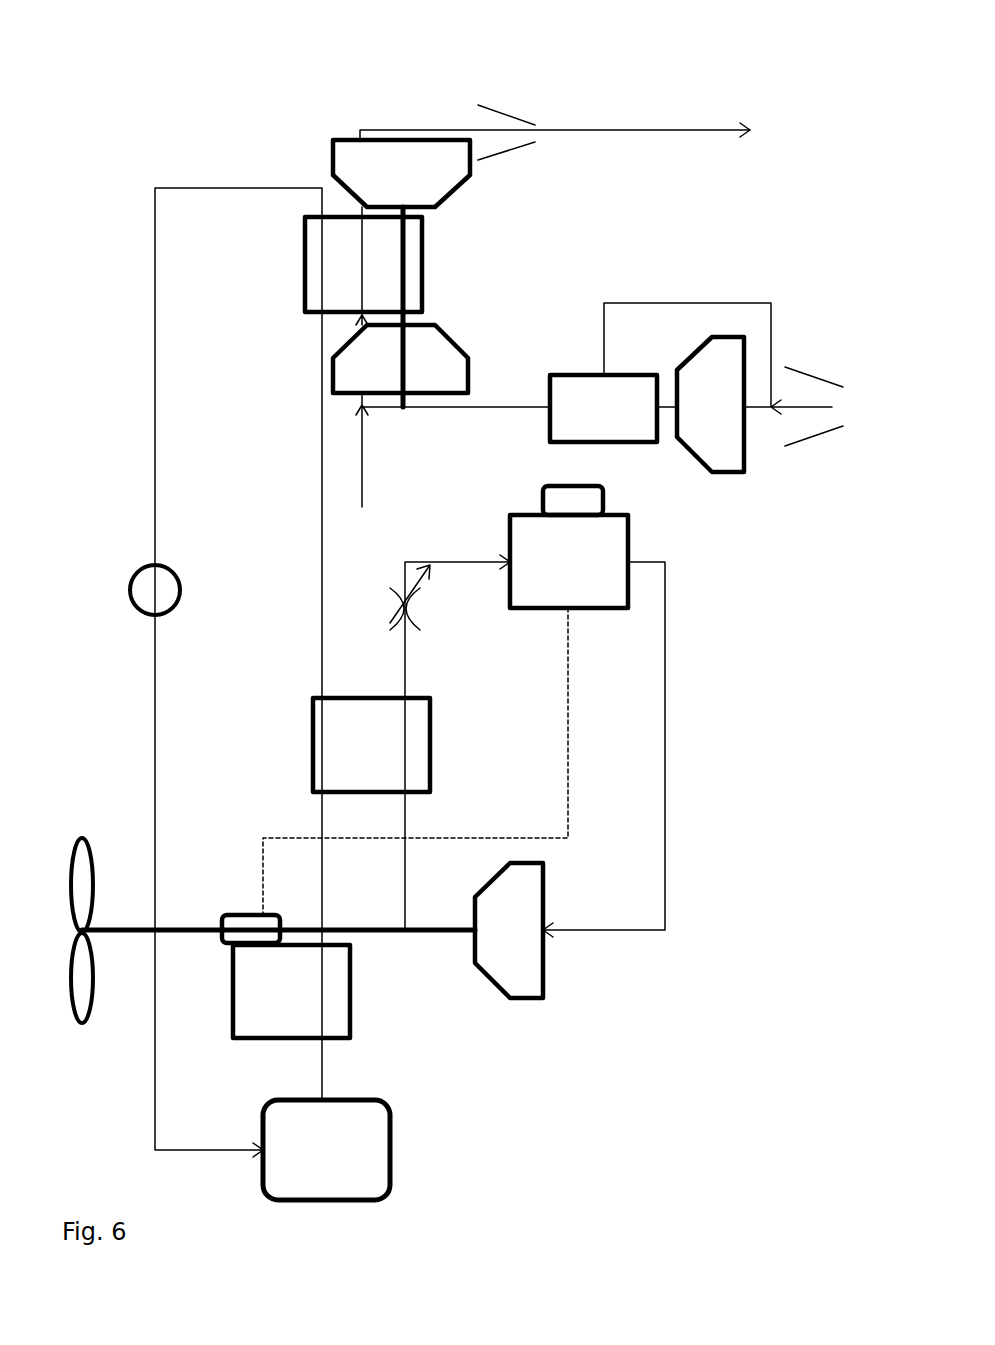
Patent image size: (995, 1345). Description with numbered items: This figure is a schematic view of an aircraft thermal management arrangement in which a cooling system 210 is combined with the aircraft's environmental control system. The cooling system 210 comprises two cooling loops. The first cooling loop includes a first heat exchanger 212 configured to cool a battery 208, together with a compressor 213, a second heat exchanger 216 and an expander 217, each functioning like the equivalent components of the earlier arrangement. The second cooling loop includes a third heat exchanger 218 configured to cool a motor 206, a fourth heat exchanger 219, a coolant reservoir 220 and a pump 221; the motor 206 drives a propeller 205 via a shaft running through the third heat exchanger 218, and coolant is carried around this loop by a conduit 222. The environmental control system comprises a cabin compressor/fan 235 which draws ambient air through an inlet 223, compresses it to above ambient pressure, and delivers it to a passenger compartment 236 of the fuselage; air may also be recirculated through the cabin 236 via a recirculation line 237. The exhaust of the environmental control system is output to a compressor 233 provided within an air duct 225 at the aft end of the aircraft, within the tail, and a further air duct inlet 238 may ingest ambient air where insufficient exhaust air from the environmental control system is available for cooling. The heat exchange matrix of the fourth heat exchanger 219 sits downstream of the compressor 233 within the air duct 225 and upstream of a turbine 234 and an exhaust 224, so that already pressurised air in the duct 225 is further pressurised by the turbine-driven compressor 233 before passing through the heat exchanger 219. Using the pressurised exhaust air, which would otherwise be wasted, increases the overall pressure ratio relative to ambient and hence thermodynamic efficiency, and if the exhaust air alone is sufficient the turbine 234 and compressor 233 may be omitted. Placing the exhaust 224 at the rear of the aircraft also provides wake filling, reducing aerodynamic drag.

The propeller 205 is at (78, 836).
The motor 206 is at (252, 917).
The battery 208 is at (603, 500).
The cooling system 210 is at (723, 816).
The first heat exchanger 212 is at (628, 533).
The compressor 213 is at (543, 962).
The second heat exchanger 216 is at (430, 700).
The expander 217 is at (398, 612).
The third heat exchanger 218 is at (350, 1035).
The fourth heat exchanger 219 is at (427, 222).
The coolant reservoir 220 is at (390, 1150).
The pump 221 is at (139, 567).
The conduit 222 is at (200, 188).
The inlet 223 is at (790, 366).
The exhaust 224 is at (482, 117).
The air duct 225 is at (580, 130).
The compressor 233 is at (460, 340).
The turbine 234 is at (460, 192).
The cabin compressor/fan 235 is at (735, 337).
The passenger compartment 236 is at (627, 375).
The recirculation line 237 is at (718, 310).
The air duct inlet 238 is at (365, 490).